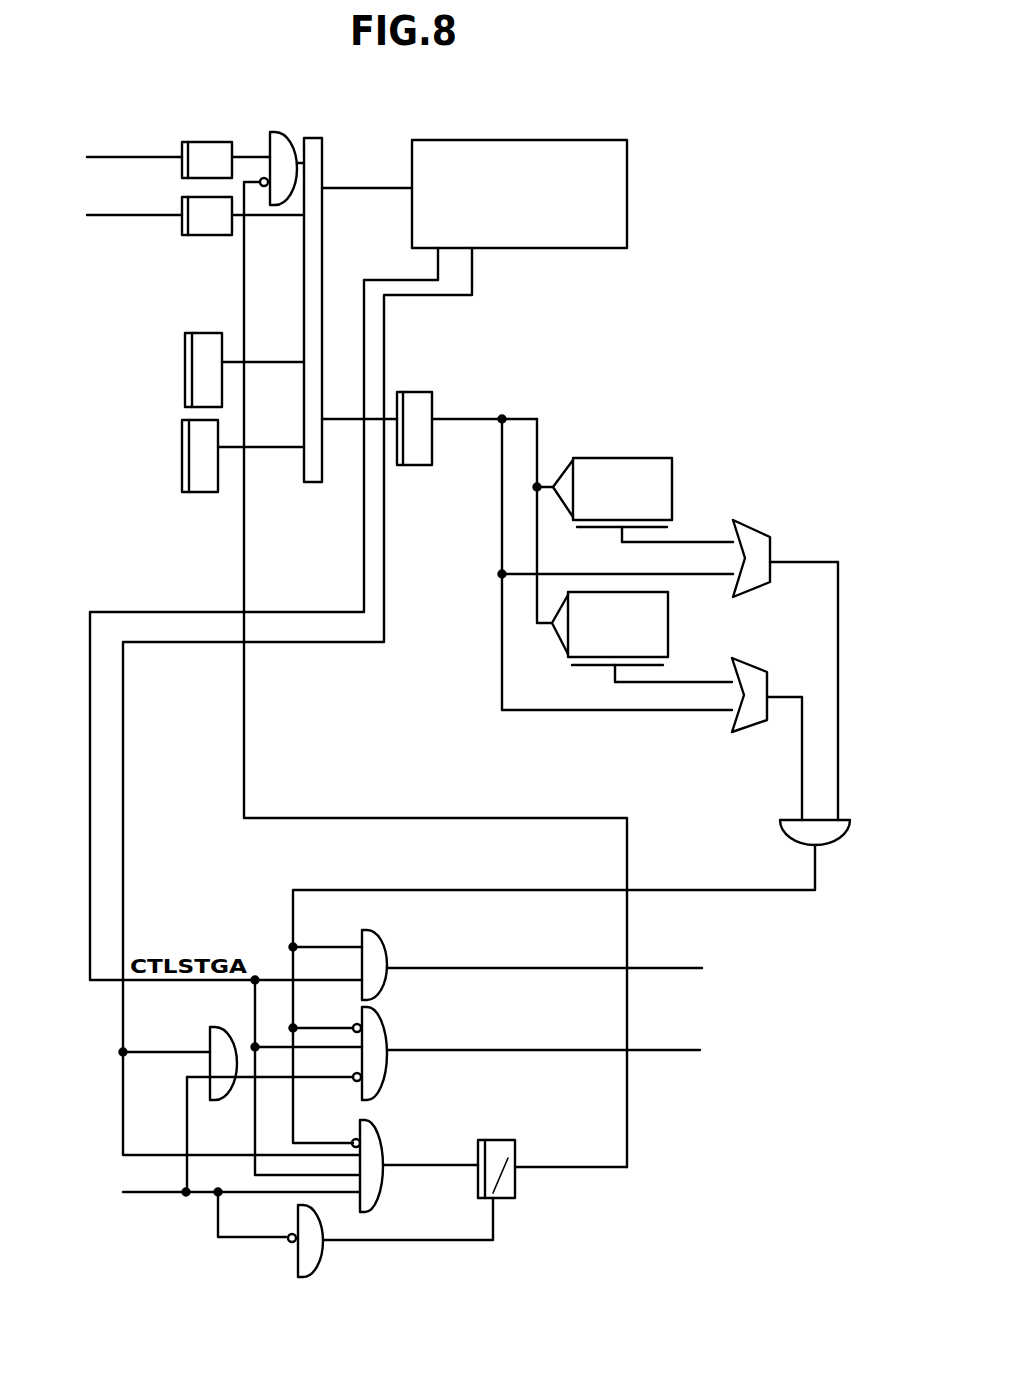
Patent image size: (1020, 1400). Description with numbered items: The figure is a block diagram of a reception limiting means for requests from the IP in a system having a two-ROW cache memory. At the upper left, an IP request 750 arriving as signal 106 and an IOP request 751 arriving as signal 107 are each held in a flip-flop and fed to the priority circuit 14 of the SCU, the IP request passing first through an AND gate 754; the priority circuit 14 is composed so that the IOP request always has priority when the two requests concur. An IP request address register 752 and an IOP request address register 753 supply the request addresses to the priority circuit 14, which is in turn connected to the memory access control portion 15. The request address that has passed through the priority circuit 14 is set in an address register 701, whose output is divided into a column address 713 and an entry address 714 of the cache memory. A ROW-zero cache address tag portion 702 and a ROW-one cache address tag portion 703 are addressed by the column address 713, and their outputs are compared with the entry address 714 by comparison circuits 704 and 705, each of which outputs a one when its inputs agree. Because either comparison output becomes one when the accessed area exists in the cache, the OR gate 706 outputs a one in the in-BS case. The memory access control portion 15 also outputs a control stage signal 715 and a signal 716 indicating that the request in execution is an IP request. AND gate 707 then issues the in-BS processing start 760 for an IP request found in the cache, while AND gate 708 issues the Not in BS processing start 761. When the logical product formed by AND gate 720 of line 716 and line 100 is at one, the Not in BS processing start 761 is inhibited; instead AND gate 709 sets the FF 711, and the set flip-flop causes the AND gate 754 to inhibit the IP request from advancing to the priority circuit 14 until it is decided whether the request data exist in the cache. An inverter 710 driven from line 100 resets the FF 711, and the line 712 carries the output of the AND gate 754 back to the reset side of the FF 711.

The priority circuit 14 is at (324, 142).
The memory access control portion 15 is at (535, 248).
The signal 100 is at (210, 1203).
The signal 106 is at (112, 157).
The signal 107 is at (118, 215).
The address register 701 is at (432, 400).
The ROW 0 cache address tag portion 702 is at (672, 480).
The ROW 1 cache address tag portion 703 is at (563, 645).
The comparison circuit 704 is at (752, 545).
The comparison circuit 705 is at (760, 672).
The OR gate 706 is at (780, 830).
The AND gate 707 is at (385, 936).
The AND gate 708 is at (385, 1022).
The AND gate 709 is at (385, 1130).
The inverter 710 is at (318, 1273).
The FF 711 is at (515, 1145).
The signal line 712 is at (415, 818).
The column address 713 is at (537, 425).
The entry address 714 is at (502, 520).
The control stage signal 715 is at (422, 280).
The signal 716 is at (472, 295).
The AND gate 720 is at (215, 1030).
The IP request 750 is at (211, 121).
The IOP request 751 is at (213, 239).
The IP request address register 752 is at (185, 368).
The IOP request address register 753 is at (182, 445).
The AND gate 754 is at (290, 132).
The processing start 760 is at (580, 967).
The Not in BS processing start 761 is at (571, 1047).